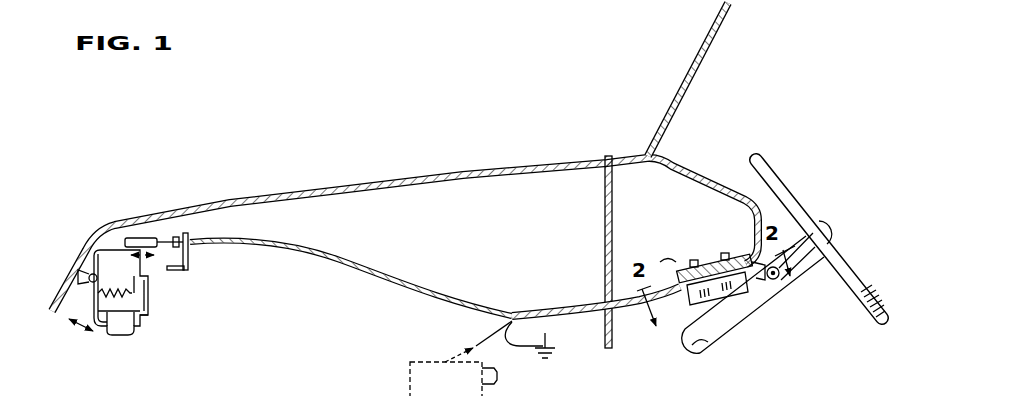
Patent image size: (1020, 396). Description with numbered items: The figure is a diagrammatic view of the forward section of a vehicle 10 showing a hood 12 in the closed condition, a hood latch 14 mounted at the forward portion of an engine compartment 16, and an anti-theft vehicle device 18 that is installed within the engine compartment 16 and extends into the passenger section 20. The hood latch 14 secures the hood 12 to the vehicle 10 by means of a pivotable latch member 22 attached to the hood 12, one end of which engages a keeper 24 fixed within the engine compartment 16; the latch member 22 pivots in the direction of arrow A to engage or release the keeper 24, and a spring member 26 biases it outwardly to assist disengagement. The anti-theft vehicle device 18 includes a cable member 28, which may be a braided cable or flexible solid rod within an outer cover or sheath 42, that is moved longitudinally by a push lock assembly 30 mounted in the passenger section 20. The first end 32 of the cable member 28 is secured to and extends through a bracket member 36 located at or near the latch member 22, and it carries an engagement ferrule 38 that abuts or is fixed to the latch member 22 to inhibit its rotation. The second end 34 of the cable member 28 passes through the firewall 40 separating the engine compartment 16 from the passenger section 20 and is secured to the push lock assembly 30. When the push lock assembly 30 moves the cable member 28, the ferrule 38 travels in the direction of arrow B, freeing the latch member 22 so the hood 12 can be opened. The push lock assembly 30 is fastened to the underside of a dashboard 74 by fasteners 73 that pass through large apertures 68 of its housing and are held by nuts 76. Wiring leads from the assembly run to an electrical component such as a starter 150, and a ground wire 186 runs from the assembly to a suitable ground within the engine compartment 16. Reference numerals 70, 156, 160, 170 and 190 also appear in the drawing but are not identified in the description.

The vehicle 10 is at (502, 52).
The hood 12 is at (307, 189).
The hood latch 14 is at (178, 315).
The engine compartment 16 is at (446, 237).
The anti-theft vehicle device 18 is at (492, 300).
The passenger section 20 is at (815, 66).
The pivotable latch member 22 is at (90, 262).
The keeper 24 is at (125, 322).
The spring member 26 is at (138, 310).
The cable member 28 is at (167, 233).
The push lock assembly 30 is at (690, 284).
The first end 32 is at (160, 237).
The second end 34 is at (683, 294).
The bracket member 36 is at (198, 223).
The engagement ferrule 38 is at (135, 228).
The firewall 40 is at (603, 189).
The outer cover or sheath 42 is at (286, 246).
The large apertures 68 is at (757, 385).
The solenoid 70 is at (704, 334).
The fasteners 73 is at (727, 254).
The dashboard 74 is at (777, 280).
The nuts 76 is at (688, 262).
The starter 150 is at (408, 363).
The terminal 156 is at (619, 390).
The terminal 160 is at (579, 390).
The terminal 170 is at (649, 390).
The ground wire 186 is at (540, 334).
The terminal 190 is at (537, 390).